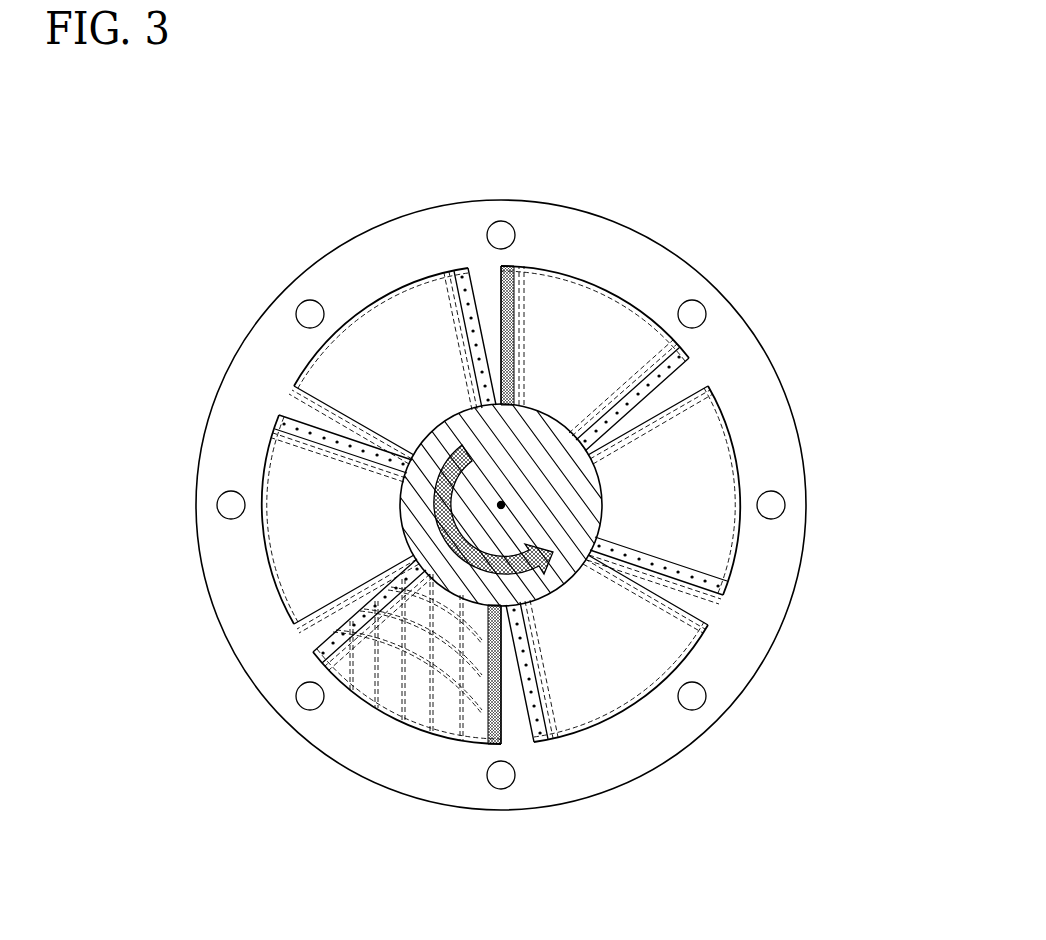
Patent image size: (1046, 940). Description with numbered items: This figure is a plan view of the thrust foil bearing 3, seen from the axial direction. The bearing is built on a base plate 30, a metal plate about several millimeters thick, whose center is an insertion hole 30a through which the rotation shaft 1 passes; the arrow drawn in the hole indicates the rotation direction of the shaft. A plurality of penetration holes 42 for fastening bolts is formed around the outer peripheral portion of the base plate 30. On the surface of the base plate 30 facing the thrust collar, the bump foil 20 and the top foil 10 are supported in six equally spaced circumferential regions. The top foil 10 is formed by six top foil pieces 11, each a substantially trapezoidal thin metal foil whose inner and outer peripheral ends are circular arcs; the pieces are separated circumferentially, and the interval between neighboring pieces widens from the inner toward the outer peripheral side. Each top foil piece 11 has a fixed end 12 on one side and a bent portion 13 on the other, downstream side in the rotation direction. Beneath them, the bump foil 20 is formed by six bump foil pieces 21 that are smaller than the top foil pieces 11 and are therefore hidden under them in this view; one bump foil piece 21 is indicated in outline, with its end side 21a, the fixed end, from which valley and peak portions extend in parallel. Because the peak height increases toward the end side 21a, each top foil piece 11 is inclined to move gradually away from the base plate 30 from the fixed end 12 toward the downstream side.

The rotation shaft 1 is at (413, 453).
The thrust foil bearing 3 is at (645, 208).
The top foil 10 is at (633, 295).
The top foil piece 11 is at (688, 355).
The fixed end 12 is at (316, 628).
The bent portion 13 is at (477, 292).
The bump foil 20 is at (408, 727).
The bump foil piece 21 is at (565, 278).
The end side 21a is at (500, 705).
The base plate 30 is at (533, 203).
The insertion hole 30a is at (620, 548).
The penetration hole 42 is at (503, 232).